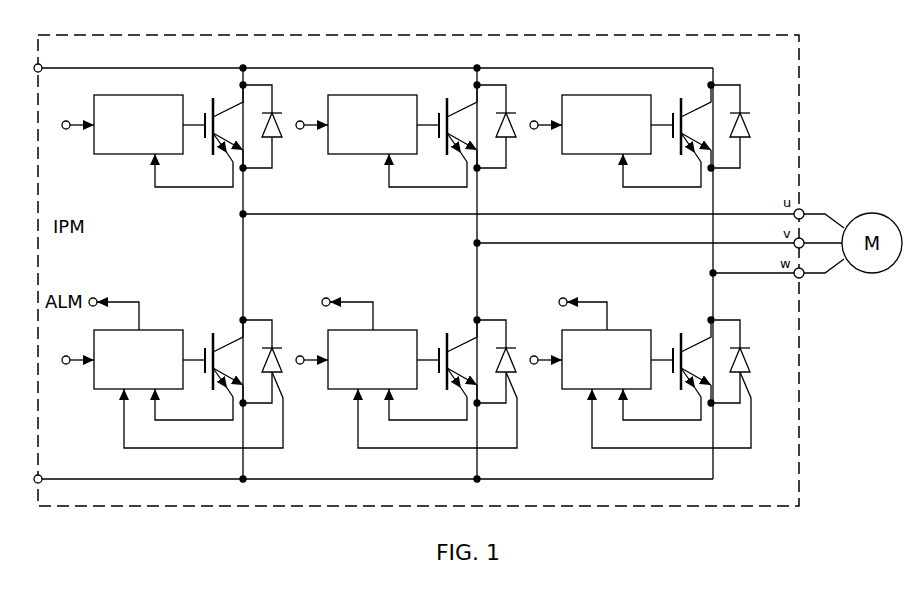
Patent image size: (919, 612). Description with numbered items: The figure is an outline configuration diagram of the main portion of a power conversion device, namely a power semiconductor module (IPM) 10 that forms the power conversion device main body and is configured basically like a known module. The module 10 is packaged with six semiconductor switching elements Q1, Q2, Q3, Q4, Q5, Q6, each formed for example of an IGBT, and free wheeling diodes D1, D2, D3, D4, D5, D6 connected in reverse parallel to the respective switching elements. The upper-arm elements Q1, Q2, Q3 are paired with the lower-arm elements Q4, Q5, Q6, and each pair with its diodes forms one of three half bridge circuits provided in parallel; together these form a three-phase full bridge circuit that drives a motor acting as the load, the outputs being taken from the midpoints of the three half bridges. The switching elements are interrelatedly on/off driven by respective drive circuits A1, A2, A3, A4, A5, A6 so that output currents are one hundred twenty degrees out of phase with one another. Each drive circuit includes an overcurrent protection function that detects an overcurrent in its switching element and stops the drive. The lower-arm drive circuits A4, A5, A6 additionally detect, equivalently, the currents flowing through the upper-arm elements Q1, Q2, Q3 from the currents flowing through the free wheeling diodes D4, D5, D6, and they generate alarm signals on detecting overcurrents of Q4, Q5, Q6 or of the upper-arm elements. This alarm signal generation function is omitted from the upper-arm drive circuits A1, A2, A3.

The power semiconductor module (IPM) 10 is at (777, 87).
The semiconductor switching element Q1 is at (214, 124).
The semiconductor switching element Q2 is at (448, 124).
The semiconductor switching element Q3 is at (682, 124).
The semiconductor switching element Q4 is at (214, 359).
The semiconductor switching element Q5 is at (448, 359).
The semiconductor switching element Q6 is at (682, 359).
The free wheeling diode D1 is at (266, 139).
The free wheeling diode D2 is at (509, 131).
The free wheeling diode D3 is at (744, 127).
The free wheeling diode D4 is at (283, 365).
The free wheeling diode D5 is at (514, 364).
The free wheeling diode D6 is at (747, 361).
The drive circuit A1 is at (118, 155).
The drive circuit A2 is at (381, 143).
The drive circuit A3 is at (615, 147).
The drive circuit A4 is at (172, 373).
The drive circuit A5 is at (406, 373).
The drive circuit A6 is at (640, 373).